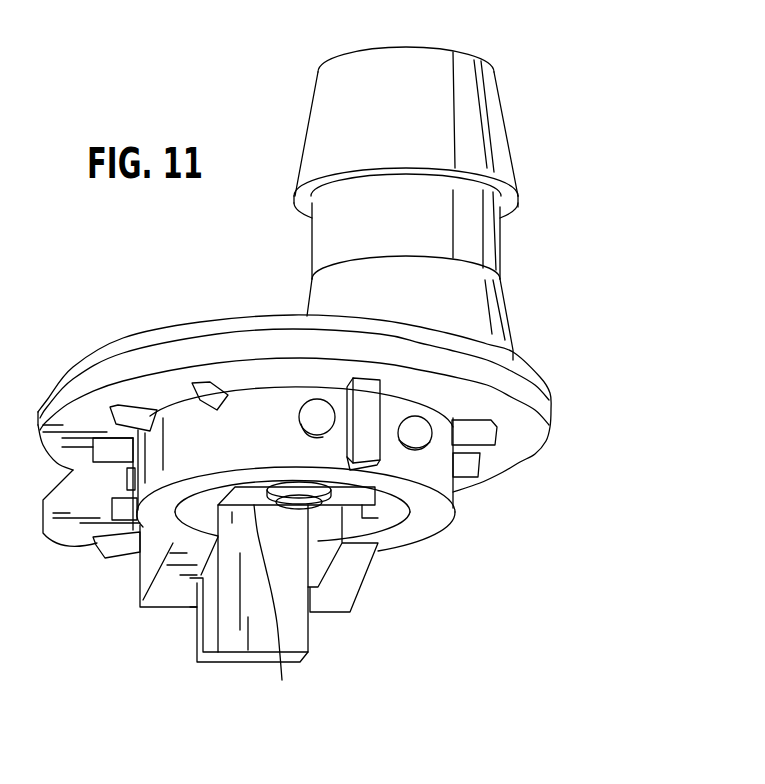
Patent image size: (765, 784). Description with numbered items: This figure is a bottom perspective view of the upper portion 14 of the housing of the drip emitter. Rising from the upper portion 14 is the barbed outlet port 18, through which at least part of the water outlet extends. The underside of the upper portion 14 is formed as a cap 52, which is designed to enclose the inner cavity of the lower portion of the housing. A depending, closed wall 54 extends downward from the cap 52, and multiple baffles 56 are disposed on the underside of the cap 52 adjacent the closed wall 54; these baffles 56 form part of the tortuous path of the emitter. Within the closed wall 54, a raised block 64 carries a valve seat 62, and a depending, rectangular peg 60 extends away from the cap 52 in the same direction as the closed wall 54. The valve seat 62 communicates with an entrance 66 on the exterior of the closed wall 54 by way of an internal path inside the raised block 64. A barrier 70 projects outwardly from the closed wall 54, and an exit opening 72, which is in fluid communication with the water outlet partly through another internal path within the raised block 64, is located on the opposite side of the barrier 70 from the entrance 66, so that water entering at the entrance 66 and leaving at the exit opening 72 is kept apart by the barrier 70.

The upper portion 14 is at (124, 339).
The barbed outlet port 18 is at (507, 117).
The cap 52 is at (551, 418).
The closed wall 54 is at (449, 483).
The baffles 56 is at (497, 437).
The rectangular peg 60 is at (310, 640).
The valve seat 62 is at (320, 505).
The raised block 64 is at (282, 680).
The entrance 66 is at (298, 415).
The barrier 70 is at (380, 413).
The exit opening 72 is at (430, 442).